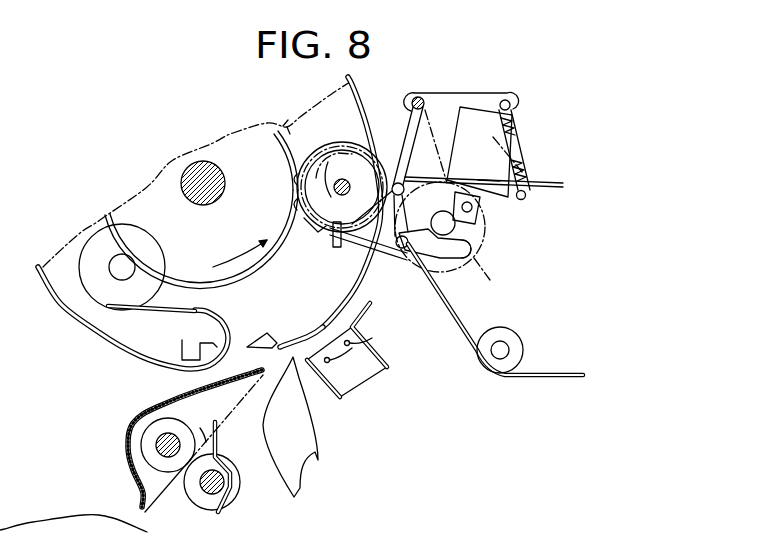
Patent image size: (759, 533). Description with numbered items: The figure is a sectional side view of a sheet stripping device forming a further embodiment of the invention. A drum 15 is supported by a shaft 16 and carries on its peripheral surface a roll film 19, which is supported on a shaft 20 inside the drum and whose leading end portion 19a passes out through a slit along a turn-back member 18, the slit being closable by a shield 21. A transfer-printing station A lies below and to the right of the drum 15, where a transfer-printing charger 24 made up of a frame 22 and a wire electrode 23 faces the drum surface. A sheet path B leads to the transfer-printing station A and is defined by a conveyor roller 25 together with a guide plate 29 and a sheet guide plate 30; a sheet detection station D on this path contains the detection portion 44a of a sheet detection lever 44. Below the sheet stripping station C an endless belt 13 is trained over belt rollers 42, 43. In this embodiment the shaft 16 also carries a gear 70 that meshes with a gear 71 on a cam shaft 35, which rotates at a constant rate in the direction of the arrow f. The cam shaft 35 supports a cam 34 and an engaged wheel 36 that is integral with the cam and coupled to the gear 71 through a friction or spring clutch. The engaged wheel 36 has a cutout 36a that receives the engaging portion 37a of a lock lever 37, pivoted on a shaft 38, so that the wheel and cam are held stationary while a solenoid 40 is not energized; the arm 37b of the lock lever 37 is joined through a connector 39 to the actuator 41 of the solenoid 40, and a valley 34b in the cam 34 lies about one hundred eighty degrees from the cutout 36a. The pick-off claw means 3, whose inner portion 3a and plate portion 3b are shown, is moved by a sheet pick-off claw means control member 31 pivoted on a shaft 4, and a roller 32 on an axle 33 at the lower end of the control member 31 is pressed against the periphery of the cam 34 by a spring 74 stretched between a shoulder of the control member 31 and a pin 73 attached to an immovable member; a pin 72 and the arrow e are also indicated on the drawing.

The pick-off claw means 3 is at (403, 150).
The pin 3a is at (343, 167).
The plate 3b is at (422, 171).
The shaft 4 is at (418, 96).
The endless belt 13 is at (452, 338).
The drum 15 is at (357, 98).
The shaft 16 is at (182, 195).
The turn-back member 18 is at (222, 346).
The roll film 19 is at (161, 264).
The leading end portion 19a is at (194, 310).
The shaft 20 is at (96, 232).
The shield 21 is at (262, 328).
The frame 22 is at (320, 376).
The wire electrode 23 is at (362, 340).
The transfer-printing charger 24 is at (371, 381).
The conveyor roller 25 is at (144, 456).
The guide plate 29 is at (288, 443).
The sheet guide plate 30 is at (132, 428).
The sheet pick-off claw means control member 31 is at (455, 93).
The roller 32 is at (482, 222).
The axle 33 is at (420, 235).
The cam 34 is at (312, 224).
The valley 34b is at (297, 182).
The cam shaft 35 is at (297, 206).
The engaged wheel 36 is at (306, 143).
The cutout 36a is at (293, 262).
The lock lever 37 is at (371, 262).
The engaging portion 37a is at (341, 248).
The arm 37b is at (440, 268).
The shaft 38 is at (401, 250).
The connector 39 is at (472, 256).
The solenoid 40 is at (517, 126).
The actuator 41 is at (486, 192).
The belt roller 42 is at (474, 272).
The belt roller 43 is at (509, 332).
The sheet detection lever 44 is at (232, 490).
The detection portion 44a is at (228, 436).
The gear 70 is at (288, 127).
The gear 71 is at (346, 143).
The pin 72 is at (506, 100).
The pin 73 is at (527, 198).
The spring 74 is at (528, 172).
The transfer-printing station A is at (296, 324).
The sheet path B is at (174, 490).
The sheet stripping station C is at (350, 187).
The sheet detection station D is at (200, 419).
The rotation arrow e is at (240, 256).
The arrow f is at (340, 183).